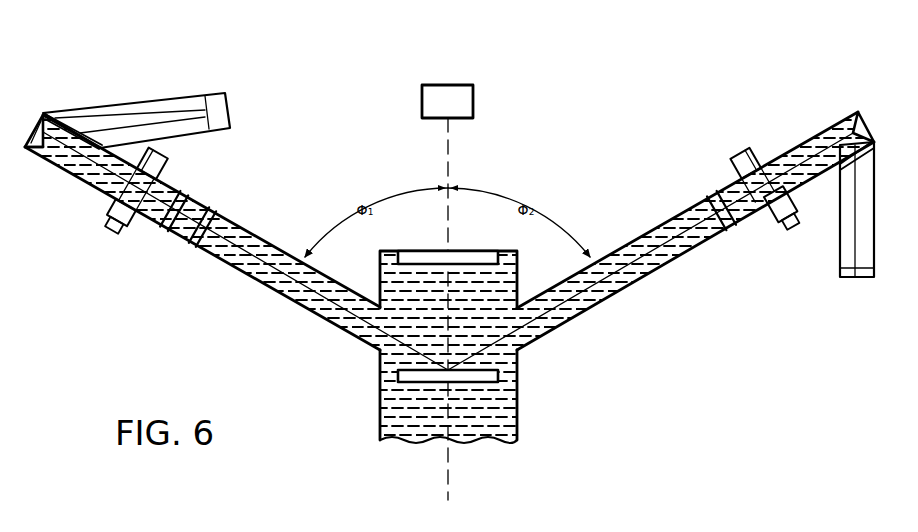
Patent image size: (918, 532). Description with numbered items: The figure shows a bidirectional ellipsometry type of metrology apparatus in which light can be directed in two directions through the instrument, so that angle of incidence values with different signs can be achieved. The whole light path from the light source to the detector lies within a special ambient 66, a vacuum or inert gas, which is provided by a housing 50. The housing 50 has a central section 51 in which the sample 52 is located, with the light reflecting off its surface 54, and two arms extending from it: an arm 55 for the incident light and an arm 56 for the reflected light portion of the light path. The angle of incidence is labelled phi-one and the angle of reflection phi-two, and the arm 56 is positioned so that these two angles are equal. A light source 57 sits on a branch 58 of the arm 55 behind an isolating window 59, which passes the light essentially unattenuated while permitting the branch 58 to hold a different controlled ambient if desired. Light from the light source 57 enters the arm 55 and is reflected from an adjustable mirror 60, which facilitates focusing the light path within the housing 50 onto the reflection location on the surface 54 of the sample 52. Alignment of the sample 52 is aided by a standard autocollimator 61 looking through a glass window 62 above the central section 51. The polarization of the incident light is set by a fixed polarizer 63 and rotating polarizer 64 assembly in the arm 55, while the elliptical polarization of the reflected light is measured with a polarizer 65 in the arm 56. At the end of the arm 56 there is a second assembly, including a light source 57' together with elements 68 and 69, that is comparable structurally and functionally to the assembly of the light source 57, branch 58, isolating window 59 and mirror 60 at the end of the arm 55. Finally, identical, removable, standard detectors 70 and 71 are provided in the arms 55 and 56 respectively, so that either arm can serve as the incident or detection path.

The housing 50 is at (292, 243).
The central section 51 is at (397, 323).
The sample 52 is at (487, 380).
The surface 54 is at (420, 367).
The arm 55 is at (168, 177).
The arm 56 is at (687, 203).
The light source 57 is at (168, 99).
The light detector 57' is at (848, 239).
The branch 58 is at (448, 369).
The isolating window 59 is at (63, 118).
The adjustable mirror 60 is at (40, 150).
The autocollimator 61 is at (448, 92).
The glass window 62 is at (463, 256).
The fixed polarizer 63 is at (175, 222).
The rotating polarizer 64 is at (202, 240).
The polarizer 65 is at (710, 204).
The special ambient 66 is at (433, 294).
The element of assembly 68 is at (843, 170).
The element of assembly 69 is at (860, 110).
The detector 70 is at (107, 232).
The detector 71 is at (792, 232).